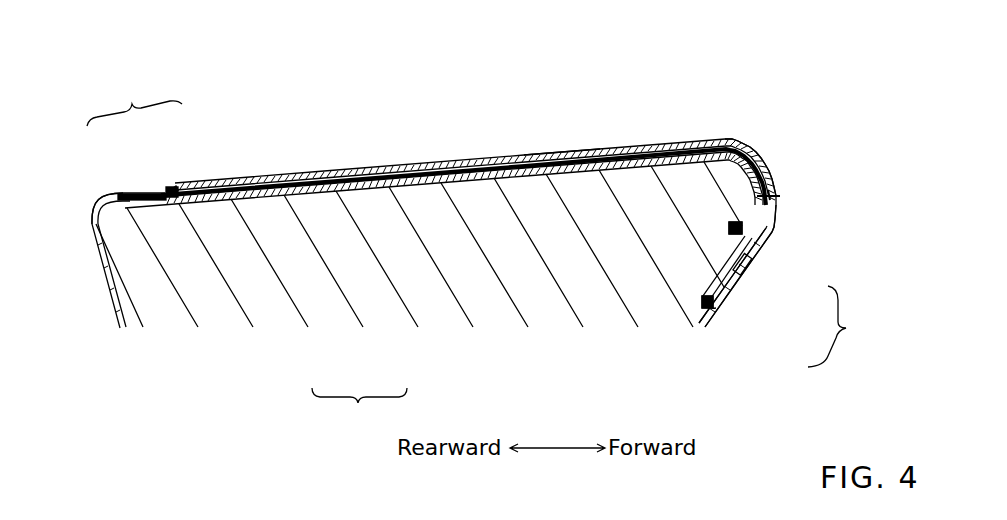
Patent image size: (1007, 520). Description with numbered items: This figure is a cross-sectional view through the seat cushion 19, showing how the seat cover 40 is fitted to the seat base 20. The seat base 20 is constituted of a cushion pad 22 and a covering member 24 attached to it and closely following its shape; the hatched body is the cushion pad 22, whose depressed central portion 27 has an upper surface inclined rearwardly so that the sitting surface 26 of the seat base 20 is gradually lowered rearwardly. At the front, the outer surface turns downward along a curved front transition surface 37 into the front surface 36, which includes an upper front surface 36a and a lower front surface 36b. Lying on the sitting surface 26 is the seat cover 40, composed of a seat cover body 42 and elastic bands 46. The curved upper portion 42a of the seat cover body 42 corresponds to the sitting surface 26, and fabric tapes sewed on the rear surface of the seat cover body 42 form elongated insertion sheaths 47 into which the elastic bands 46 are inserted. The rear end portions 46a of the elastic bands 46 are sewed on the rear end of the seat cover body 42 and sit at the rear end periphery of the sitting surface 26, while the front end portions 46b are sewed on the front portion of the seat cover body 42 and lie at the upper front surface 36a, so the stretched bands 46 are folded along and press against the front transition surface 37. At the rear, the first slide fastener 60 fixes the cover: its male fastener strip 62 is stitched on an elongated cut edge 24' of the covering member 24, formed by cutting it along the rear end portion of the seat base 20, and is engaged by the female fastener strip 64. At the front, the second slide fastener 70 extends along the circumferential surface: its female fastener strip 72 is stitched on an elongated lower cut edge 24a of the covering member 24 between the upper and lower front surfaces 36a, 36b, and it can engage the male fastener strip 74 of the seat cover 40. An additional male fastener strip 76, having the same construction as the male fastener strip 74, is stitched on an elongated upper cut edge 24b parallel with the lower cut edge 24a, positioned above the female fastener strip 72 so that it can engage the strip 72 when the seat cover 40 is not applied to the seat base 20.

The seat cushion 19 is at (592, 105).
The seat base 20 is at (359, 410).
The cushion pad 22 is at (385, 262).
The covering member 24 is at (429, 290).
The cut edge 24' is at (82, 189).
The lower cut edge 24a is at (718, 317).
The upper cut edge 24b is at (747, 231).
The sitting surface 26 is at (513, 155).
The central portion 27 is at (638, 205).
The front surface 36 is at (805, 316).
The upper front surface 36a is at (745, 224).
The lower front surface 36b is at (715, 320).
The front transition surface 37 is at (765, 165).
The seat cover 40 is at (292, 175).
The seat cover body 42 is at (467, 163).
The curved upper portion 42a is at (552, 149).
The elastic band 46 is at (410, 172).
The rear end portion 46a is at (197, 185).
The front end portion 46b is at (774, 192).
The elongated insertion sheath 47 is at (358, 166).
The first slide fastener 60 is at (134, 102).
The male fastener strip 62 is at (147, 196).
The female fastener strip 64 is at (156, 188).
The second slide fastener 70 is at (840, 326).
The female fastener strip 72 is at (743, 290).
The male fastener strip 74 is at (748, 270).
The additional male fastener strip 76 is at (748, 252).